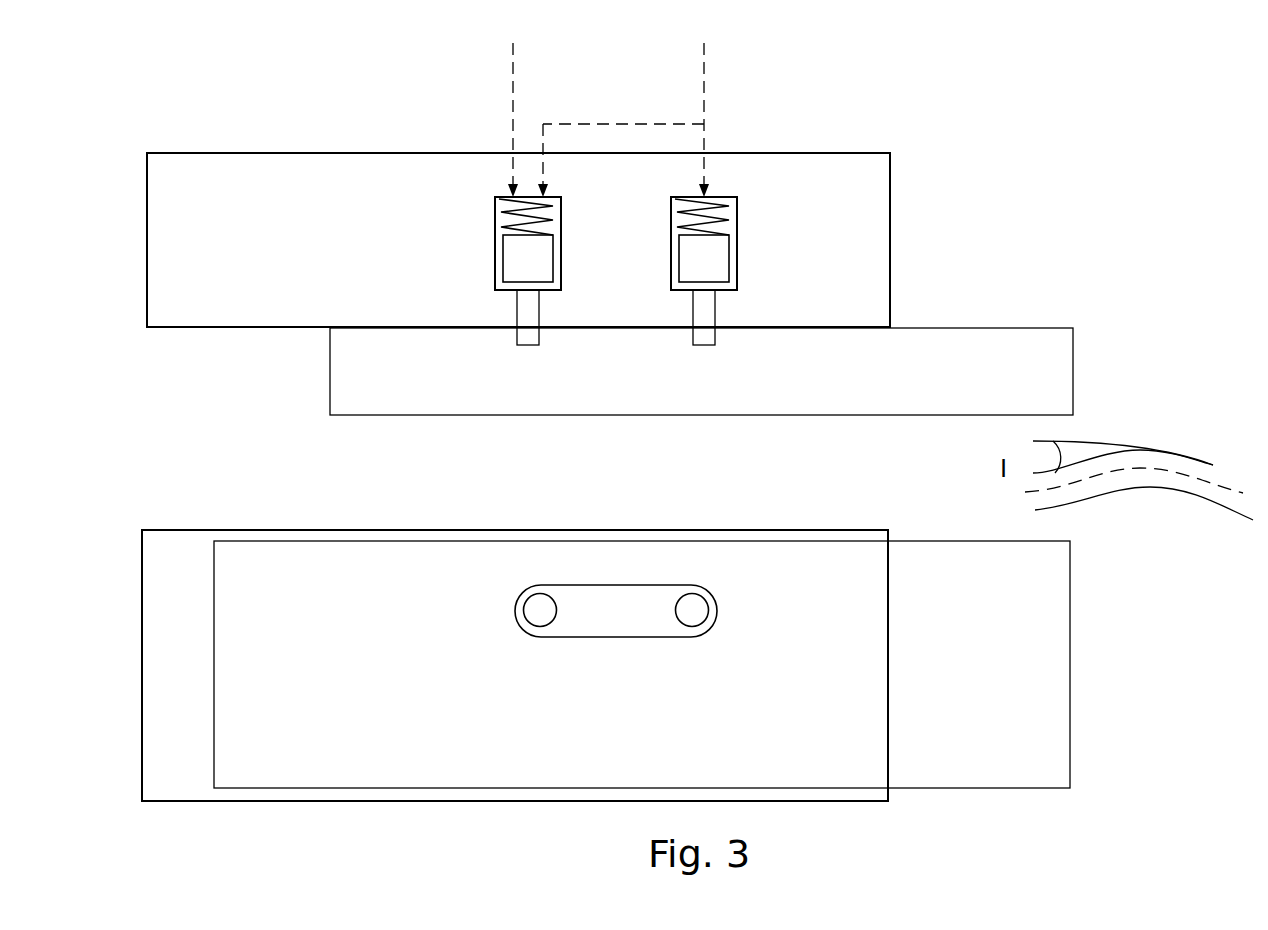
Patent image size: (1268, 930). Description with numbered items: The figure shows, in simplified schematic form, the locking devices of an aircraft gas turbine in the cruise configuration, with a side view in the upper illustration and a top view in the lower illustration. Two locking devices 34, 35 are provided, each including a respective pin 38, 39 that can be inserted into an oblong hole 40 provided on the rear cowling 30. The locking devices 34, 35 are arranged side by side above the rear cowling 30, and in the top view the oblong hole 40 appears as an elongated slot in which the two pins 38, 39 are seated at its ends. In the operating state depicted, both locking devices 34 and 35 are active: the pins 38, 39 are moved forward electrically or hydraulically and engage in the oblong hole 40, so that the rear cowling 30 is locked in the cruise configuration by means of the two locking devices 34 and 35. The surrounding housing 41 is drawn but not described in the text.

The rear cowling 30 is at (975, 327).
The locking device 34 is at (497, 208).
The locking device 35 is at (723, 197).
The pin 38 is at (520, 337).
The pin 39 is at (708, 337).
The oblong hole 40 is at (623, 620).
The housing 41 is at (232, 153).